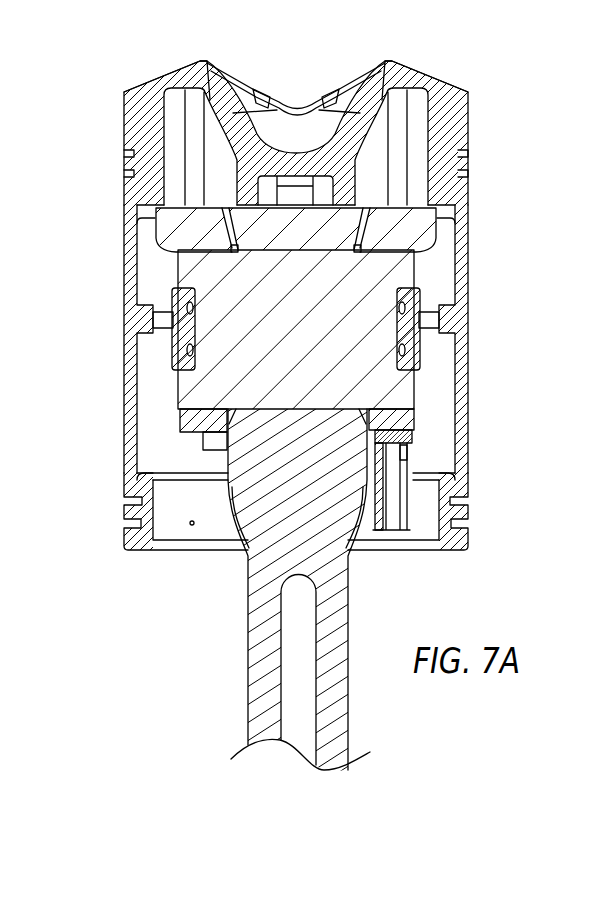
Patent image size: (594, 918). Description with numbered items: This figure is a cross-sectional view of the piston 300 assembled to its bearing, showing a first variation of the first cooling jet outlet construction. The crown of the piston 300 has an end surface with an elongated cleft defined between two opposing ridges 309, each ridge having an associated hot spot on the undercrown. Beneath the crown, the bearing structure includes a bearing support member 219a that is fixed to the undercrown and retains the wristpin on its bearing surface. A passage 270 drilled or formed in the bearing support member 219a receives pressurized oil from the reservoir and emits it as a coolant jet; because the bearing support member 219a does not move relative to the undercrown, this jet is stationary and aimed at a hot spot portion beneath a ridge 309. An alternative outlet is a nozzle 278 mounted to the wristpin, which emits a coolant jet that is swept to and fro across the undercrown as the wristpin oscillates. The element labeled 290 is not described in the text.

The piston 300 is at (318, 407).
The passage 270 is at (400, 194).
The valve seat base 290 is at (225, 217).
The ridges 309 is at (190, 66).
The bearing support member 219a is at (178, 231).
The nozzle 278 is at (233, 249).